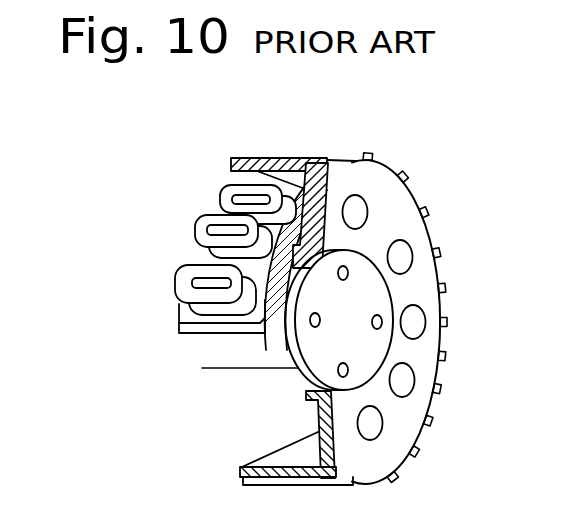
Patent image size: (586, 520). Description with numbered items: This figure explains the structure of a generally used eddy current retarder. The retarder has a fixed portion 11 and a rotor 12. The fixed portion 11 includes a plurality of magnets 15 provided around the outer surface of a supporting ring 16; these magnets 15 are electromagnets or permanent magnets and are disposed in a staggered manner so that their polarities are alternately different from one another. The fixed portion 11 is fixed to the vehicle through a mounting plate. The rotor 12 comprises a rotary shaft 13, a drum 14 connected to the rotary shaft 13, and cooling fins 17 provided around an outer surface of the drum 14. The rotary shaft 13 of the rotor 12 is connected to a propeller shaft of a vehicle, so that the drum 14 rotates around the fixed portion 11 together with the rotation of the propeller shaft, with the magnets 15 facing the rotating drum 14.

The fixed portion 11 is at (98, 377).
The rotor 12 is at (463, 288).
The rotary shaft 13 is at (258, 356).
The drum 14 is at (288, 161).
The magnets 15 is at (232, 188).
The supporting ring 16 is at (200, 337).
The cooling fins 17 is at (373, 162).